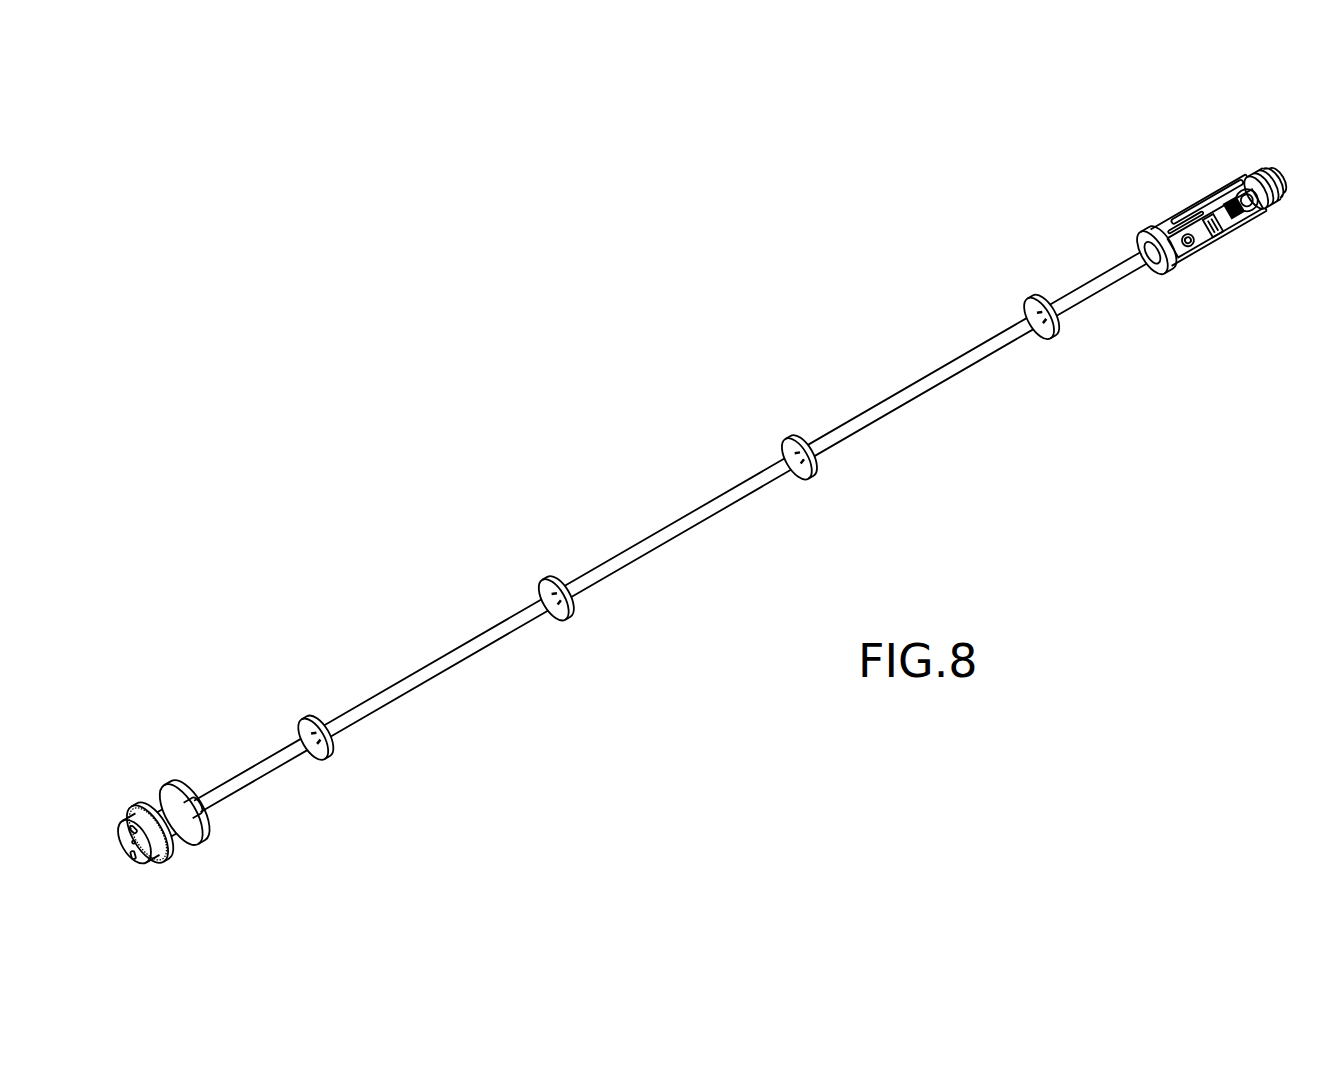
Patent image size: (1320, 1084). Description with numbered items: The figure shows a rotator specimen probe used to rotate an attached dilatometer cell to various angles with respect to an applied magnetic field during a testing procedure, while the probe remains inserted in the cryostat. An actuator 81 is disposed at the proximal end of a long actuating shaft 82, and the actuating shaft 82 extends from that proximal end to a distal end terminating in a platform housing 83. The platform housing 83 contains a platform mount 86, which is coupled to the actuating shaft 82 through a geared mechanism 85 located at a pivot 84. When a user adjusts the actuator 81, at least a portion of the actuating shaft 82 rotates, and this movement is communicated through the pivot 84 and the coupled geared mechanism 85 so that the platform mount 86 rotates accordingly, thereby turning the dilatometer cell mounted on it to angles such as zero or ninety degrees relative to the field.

The actuator 81 is at (653, 541).
The actuating shaft 82 is at (163, 866).
The platform housing 83 is at (1098, 150).
The pivot 84 is at (1168, 230).
The geared mechanism 85 is at (1248, 220).
The platform mount 86 is at (1223, 227).